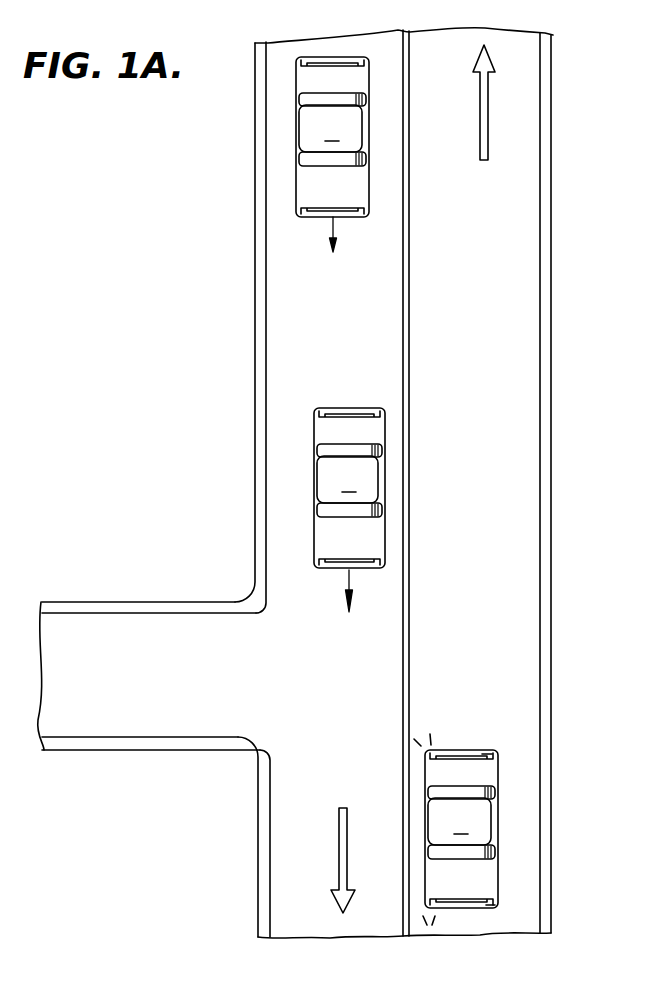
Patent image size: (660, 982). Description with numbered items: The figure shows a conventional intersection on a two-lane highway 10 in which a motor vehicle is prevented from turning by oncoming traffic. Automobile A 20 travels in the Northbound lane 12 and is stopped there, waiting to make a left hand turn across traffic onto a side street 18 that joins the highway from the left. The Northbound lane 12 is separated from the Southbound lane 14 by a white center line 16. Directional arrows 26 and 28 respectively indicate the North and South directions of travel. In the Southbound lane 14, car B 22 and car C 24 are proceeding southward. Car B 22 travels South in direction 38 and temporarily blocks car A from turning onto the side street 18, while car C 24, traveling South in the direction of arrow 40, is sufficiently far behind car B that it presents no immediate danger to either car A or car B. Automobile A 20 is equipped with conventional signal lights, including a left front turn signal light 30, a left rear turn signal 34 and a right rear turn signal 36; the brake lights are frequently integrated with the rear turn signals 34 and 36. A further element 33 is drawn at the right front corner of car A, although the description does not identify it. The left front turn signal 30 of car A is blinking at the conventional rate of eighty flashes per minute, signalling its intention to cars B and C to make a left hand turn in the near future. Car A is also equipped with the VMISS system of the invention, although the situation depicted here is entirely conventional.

The two-lane highway 10 is at (566, 155).
The Northbound lane 12 is at (471, 268).
The Southbound lane 14 is at (326, 695).
The white center line 16 is at (410, 368).
The side street 18 is at (164, 695).
The automobile A 20 is at (487, 781).
The car B 22 is at (318, 428).
The car C 24 is at (305, 188).
The directional arrow 26 is at (488, 130).
The directional arrow 28 is at (338, 866).
The left front turn signal light 30 is at (438, 757).
The front corner of vehicle A 33 is at (483, 752).
The left rear turn signal 34 is at (432, 908).
The right rear turn signal 36 is at (495, 904).
The direction of travel of car B 38 is at (345, 582).
The direction of travel of car C 40 is at (338, 221).